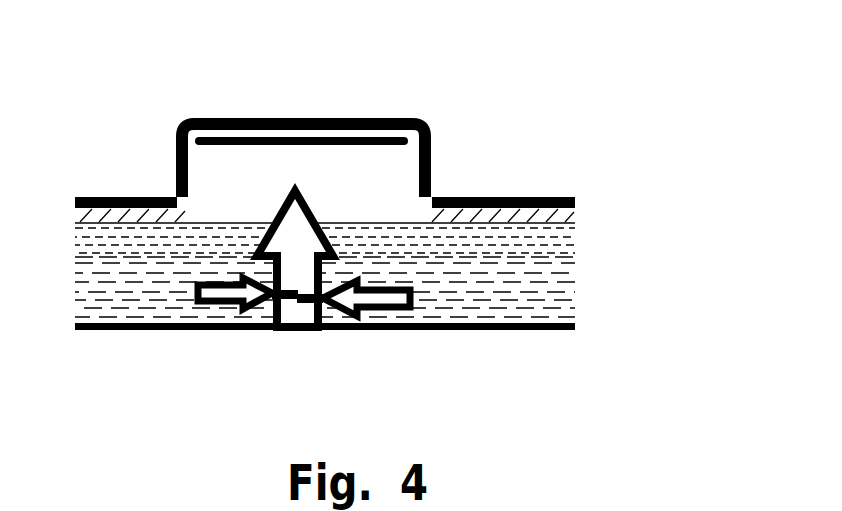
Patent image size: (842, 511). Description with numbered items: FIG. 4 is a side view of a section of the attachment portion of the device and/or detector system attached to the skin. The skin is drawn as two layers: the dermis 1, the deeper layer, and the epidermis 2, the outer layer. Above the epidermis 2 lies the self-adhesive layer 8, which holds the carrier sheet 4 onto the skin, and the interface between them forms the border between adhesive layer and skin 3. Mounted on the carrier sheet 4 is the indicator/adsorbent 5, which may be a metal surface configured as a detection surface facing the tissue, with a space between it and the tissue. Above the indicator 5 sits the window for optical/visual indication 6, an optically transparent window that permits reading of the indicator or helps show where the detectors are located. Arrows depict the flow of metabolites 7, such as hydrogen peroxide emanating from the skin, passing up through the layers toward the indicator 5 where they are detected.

The dermis 1 is at (748, 317).
The epidermis 2 is at (700, 183).
The border between adhesive layer and skin 3 is at (692, 131).
The carrier sheet 4 is at (742, 28).
The indicator/adsorbent 5 is at (525, 28).
The window for optical/visual indication 6 is at (460, 28).
The flow of metabolites 7 is at (304, 302).
The self-adhesive layer 8 is at (738, 80).